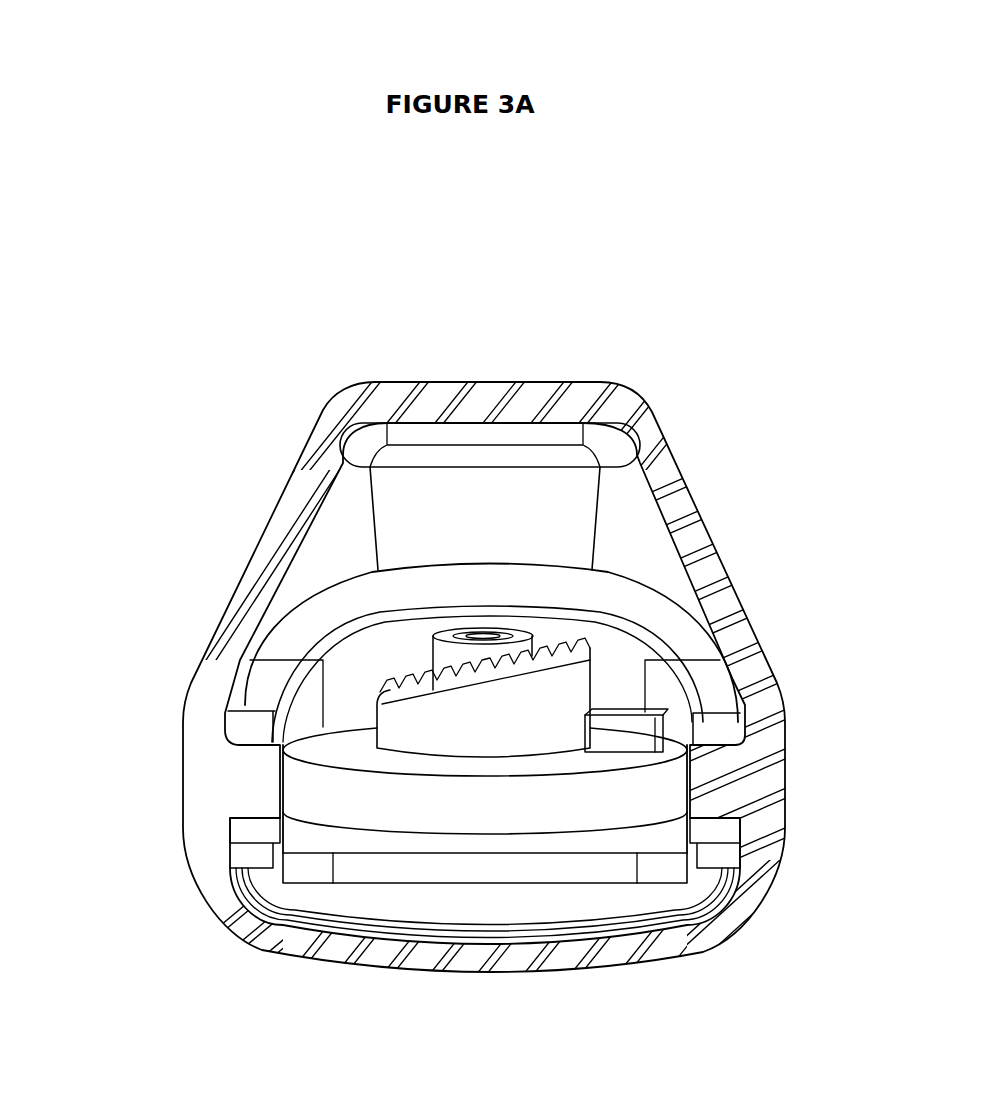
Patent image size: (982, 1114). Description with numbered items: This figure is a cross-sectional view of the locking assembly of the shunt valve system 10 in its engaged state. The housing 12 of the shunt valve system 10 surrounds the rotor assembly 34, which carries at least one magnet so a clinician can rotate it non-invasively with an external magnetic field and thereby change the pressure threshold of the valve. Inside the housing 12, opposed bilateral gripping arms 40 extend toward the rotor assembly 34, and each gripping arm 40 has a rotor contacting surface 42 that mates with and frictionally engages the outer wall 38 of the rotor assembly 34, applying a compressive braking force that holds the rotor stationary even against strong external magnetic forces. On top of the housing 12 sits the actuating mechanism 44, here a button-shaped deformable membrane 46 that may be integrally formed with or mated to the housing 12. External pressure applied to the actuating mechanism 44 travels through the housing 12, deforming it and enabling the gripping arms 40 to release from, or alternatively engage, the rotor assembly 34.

The shunt valve system 10 is at (162, 458).
The housing 12 is at (207, 870).
The rotor assembly 34 is at (483, 787).
The outer wall 38 is at (370, 808).
The gripping arm 40 is at (258, 764).
The rotor contacting surface 42 is at (280, 742).
The actuating mechanism 44 is at (482, 383).
The deformable membrane 46 is at (615, 407).